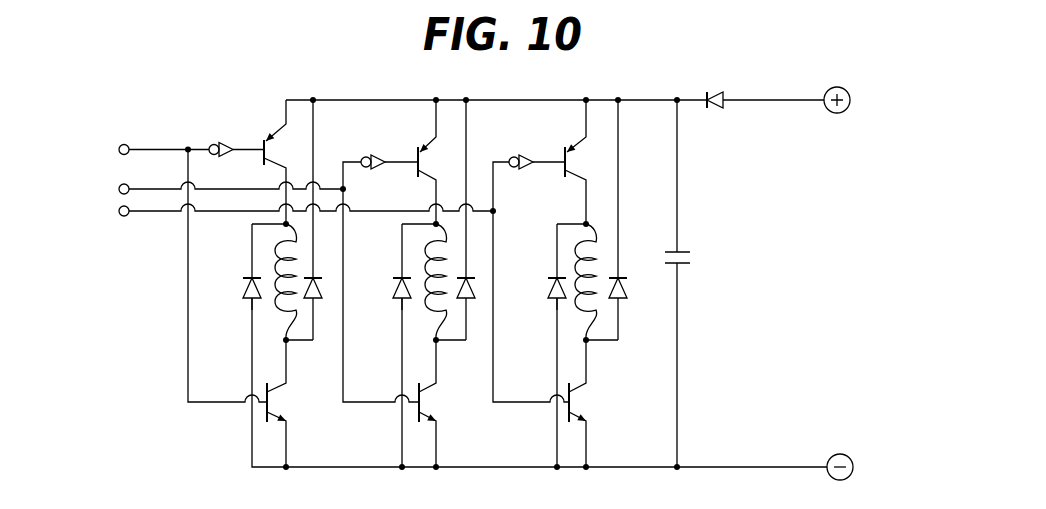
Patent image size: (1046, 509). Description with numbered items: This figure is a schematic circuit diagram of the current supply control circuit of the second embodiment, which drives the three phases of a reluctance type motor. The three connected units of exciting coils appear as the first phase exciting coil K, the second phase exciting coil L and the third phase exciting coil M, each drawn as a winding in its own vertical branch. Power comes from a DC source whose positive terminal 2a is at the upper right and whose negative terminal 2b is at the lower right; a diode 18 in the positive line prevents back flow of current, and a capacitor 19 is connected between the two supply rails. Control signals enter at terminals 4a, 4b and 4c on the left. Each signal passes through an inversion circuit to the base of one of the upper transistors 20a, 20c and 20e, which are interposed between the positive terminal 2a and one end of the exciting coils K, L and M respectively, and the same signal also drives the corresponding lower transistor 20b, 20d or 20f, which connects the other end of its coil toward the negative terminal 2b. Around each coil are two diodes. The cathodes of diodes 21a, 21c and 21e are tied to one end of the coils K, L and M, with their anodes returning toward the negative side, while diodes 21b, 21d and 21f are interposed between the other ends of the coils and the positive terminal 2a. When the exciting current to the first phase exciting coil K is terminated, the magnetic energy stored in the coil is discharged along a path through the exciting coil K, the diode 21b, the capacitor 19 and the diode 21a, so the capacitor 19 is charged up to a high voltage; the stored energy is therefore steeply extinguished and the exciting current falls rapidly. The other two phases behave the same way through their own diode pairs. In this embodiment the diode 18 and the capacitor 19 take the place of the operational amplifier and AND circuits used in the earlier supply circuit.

The terminal 4a is at (118, 146).
The terminal 4b is at (118, 186).
The terminal 4c is at (118, 214).
The transistor 20a is at (278, 130).
The transistor 20b is at (283, 409).
The transistor 20c is at (430, 148).
The transistor 20d is at (435, 409).
The transistor 20e is at (580, 146).
The transistor 20f is at (585, 409).
The diode 21a is at (247, 291).
The diode 21b is at (323, 291).
The diode 21c is at (393, 281).
The diode 21d is at (475, 281).
The diode 21e is at (545, 287).
The diode 21f is at (628, 287).
The first phase exciting coil K is at (297, 341).
The second phase exciting coil L is at (452, 341).
The third phase exciting coil M is at (602, 341).
The diode 18 is at (708, 92).
The capacitor 19 is at (681, 265).
The positive terminal 2a is at (833, 87).
The negative terminal 2b is at (836, 453).